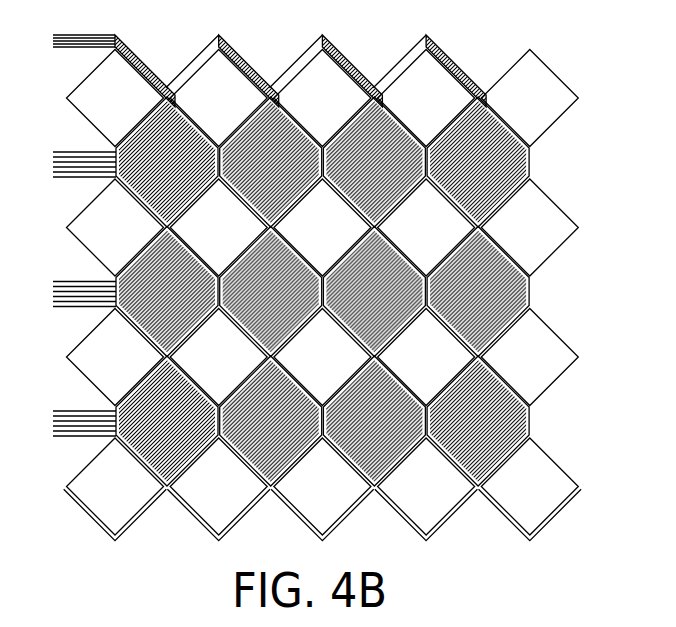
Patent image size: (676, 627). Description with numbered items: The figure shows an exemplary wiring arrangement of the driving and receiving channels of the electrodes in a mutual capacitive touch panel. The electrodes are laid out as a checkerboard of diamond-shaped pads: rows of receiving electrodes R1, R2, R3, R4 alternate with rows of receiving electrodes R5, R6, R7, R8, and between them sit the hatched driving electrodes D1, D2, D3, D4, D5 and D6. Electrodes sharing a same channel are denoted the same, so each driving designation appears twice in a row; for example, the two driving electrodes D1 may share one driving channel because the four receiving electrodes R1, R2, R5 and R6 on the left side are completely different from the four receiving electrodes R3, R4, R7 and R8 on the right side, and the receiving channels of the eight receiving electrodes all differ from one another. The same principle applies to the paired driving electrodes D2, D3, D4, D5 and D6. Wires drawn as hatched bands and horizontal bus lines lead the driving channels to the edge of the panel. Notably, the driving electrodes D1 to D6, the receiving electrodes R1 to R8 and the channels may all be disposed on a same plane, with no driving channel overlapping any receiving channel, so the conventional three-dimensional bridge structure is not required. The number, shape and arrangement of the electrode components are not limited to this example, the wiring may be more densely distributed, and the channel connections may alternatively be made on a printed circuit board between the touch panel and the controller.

The receiving electrode R1 is at (323, 228).
The receiving electrode R2 is at (218, 228).
The receiving electrode R3 is at (322, 228).
The receiving electrode R4 is at (426, 228).
The receiving electrode R5 is at (323, 357).
The receiving electrode R6 is at (218, 357).
The receiving electrode R7 is at (322, 357).
The receiving electrode R8 is at (426, 357).
The driving electrode D1 is at (270, 162).
The driving electrode D2 is at (374, 162).
The driving electrode D3 is at (270, 292).
The driving electrode D4 is at (374, 292).
The driving electrode D5 is at (270, 421).
The driving electrode D6 is at (374, 421).